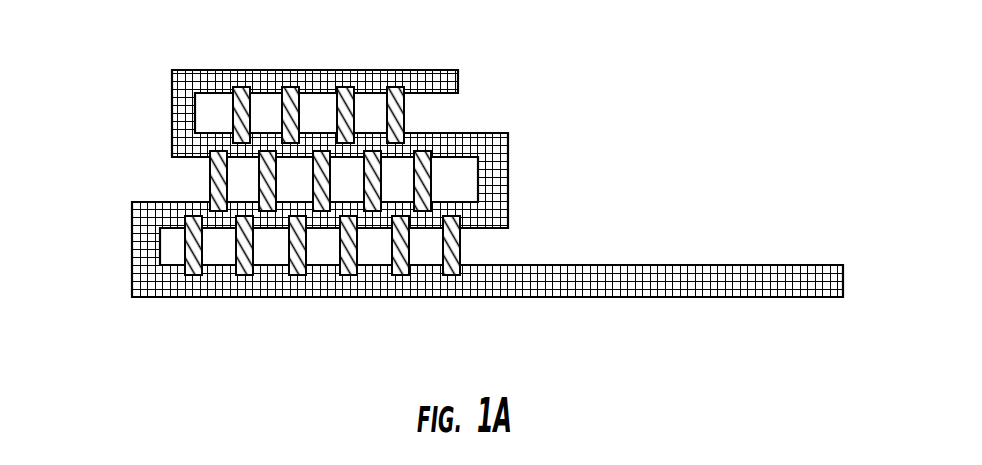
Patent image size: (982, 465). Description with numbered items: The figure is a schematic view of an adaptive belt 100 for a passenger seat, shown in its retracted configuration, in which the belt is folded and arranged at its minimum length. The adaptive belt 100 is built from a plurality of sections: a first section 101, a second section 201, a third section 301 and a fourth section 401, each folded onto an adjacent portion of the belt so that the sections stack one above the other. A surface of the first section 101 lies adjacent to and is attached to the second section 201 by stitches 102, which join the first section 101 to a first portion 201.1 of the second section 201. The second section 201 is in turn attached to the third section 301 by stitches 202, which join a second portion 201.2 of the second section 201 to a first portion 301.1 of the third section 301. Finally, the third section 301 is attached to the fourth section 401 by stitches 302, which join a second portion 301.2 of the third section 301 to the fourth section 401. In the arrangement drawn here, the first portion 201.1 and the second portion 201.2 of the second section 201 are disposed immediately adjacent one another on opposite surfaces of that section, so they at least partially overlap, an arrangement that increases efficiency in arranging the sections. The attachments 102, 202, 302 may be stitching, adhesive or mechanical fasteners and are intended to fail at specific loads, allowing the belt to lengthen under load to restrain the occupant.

The adaptive belt 100 is at (453, 182).
The first section 101 is at (768, 285).
The stitches 102 is at (297, 277).
The second section 201 is at (453, 183).
The first portion of the second section 201.1 is at (481, 228).
The second portion of the second section 201.2 is at (193, 205).
The stitches 202 is at (321, 187).
The third section 301 is at (487, 169).
The first portion of the third section 301.1 is at (455, 159).
The second portion of the third section 301.2 is at (433, 133).
The stitches 302 is at (394, 87).
The fourth section 401 is at (220, 86).